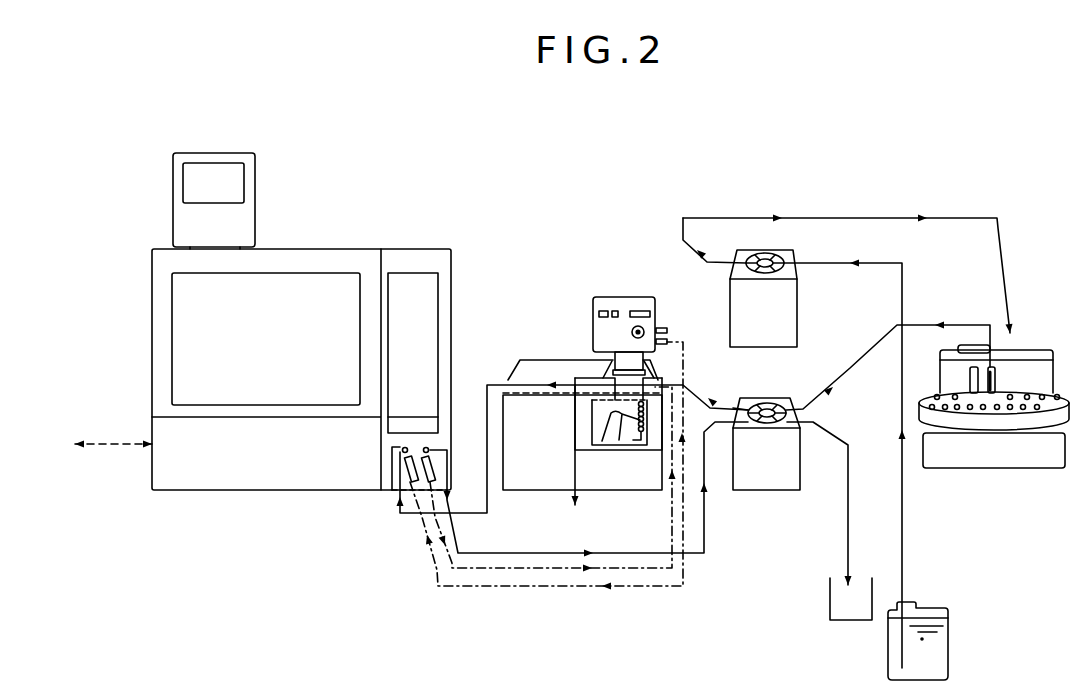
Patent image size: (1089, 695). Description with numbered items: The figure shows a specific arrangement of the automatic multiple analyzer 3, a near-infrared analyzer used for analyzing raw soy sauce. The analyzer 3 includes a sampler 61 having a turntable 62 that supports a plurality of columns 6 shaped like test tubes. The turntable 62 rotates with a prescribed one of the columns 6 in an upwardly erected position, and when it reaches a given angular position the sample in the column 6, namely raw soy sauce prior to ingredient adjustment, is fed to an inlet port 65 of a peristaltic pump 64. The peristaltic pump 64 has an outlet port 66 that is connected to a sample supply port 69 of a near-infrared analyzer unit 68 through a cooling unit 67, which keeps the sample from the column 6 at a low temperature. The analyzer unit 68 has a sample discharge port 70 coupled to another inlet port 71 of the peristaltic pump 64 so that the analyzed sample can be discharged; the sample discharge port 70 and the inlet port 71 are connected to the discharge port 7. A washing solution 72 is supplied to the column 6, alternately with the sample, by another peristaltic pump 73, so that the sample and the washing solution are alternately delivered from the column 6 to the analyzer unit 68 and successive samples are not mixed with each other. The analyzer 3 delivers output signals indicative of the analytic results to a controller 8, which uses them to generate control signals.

The automatic multiple analyzer 3 is at (560, 187).
The column 6 is at (993, 382).
The discharge port 7 is at (850, 558).
The controller 8 is at (104, 445).
The sampler 61 is at (947, 457).
The turntable 62 is at (1037, 427).
The peristaltic pump 64 is at (780, 477).
The inlet port 65 is at (797, 400).
The outlet port 66 is at (730, 400).
The cooling unit 67 is at (550, 372).
The near-infrared analyzer unit 68 is at (227, 477).
The sample supply port 69 is at (400, 449).
The sample discharge port 70 is at (428, 448).
The inlet port 71 is at (733, 428).
The washing solution 72 is at (937, 648).
The peristaltic pump 73 is at (797, 315).